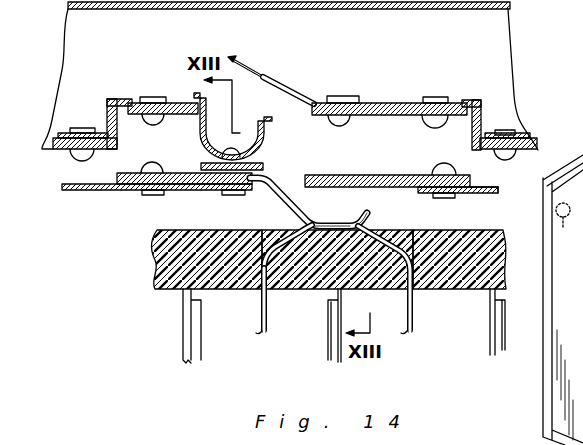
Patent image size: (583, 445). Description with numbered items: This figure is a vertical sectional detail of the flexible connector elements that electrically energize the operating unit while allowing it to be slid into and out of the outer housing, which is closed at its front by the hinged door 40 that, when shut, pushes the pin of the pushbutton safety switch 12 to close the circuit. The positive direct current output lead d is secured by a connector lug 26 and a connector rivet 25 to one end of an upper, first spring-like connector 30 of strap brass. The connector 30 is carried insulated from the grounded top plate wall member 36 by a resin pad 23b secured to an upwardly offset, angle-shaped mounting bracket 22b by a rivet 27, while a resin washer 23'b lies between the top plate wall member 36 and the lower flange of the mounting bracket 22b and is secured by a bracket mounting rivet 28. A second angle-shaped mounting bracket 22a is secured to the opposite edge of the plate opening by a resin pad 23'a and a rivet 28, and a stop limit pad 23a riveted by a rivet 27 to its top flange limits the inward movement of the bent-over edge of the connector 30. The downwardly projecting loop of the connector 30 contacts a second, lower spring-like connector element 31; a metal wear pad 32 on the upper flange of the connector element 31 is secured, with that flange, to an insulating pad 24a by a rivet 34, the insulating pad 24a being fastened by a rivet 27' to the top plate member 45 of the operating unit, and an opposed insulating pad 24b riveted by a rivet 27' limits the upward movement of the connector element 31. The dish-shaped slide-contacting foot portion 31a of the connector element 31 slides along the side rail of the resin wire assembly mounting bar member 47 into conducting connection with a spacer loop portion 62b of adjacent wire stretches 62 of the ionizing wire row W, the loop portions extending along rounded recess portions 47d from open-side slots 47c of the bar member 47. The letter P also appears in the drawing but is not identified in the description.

The second mounting bracket 22a is at (108, 104).
The mounting bracket 22b is at (478, 112).
The stop limit pad 23a is at (182, 102).
The insulating pad 23b is at (393, 102).
The resin pad 23'a is at (74, 159).
The resin washer 23'b is at (528, 128).
The insulating pad 24a is at (116, 190).
The opposed insulating pad 24b is at (403, 160).
The connector rivet 25 is at (338, 96).
The connector lug 26 is at (293, 90).
The rivet 27 is at (291, 95).
The rivet 27' is at (289, 166).
The bracket mounting rivet 28 is at (92, 128).
The first spring-like connector 30 is at (200, 147).
The second spring-like connector element 31 is at (312, 227).
The slide-contacting foot portion 31a is at (372, 215).
The metal wear pad 32 is at (262, 168).
The rivet 34 is at (225, 192).
The top plate wall member 36 is at (499, 186).
The top plate member 45 is at (498, 193).
The wire assembly mounting bar member 47 is at (156, 262).
The open-side slot 47c is at (412, 233).
The rounded recess portion 47d is at (293, 243).
The wire stretches 62 is at (262, 312).
The spacer loop portion 62b is at (283, 287).
The door 40 is at (545, 412).
The pushbutton safety switch 12 is at (564, 228).
The electric lead d is at (251, 73).
The ionizing wire row W is at (414, 312).
The plate leg P is at (486, 350).